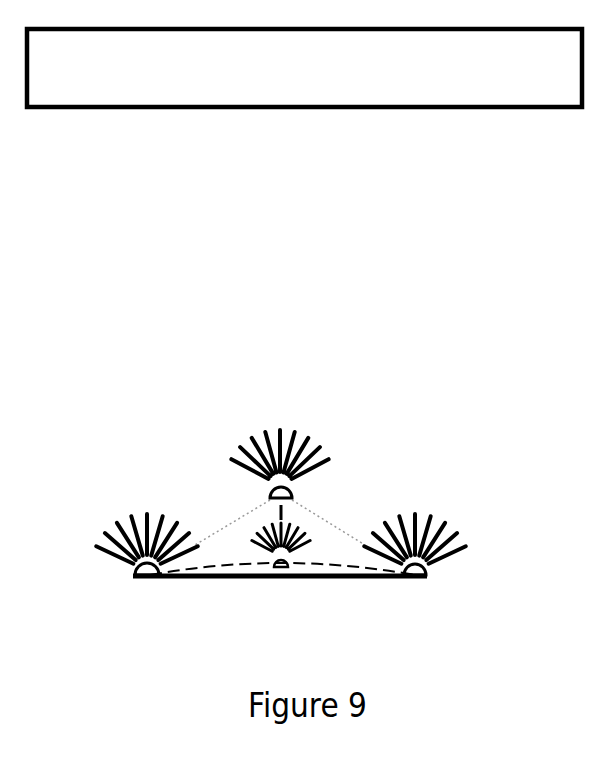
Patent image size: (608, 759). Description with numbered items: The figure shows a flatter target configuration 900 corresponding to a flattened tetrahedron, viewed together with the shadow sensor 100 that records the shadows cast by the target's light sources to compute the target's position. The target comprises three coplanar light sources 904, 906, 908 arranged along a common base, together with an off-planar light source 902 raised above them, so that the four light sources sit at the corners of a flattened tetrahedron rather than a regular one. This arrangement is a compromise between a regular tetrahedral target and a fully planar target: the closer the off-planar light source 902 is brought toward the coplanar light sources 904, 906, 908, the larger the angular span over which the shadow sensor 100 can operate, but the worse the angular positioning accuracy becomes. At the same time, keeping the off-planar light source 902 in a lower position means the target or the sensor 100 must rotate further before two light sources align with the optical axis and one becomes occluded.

The shadow sensor 100 is at (280, 81).
The target configuration 900 is at (225, 384).
The off-planar light source 902 is at (303, 428).
The coplanar light source 904 is at (462, 520).
The coplanar light source 906 is at (130, 497).
The coplanar light source 908 is at (315, 535).